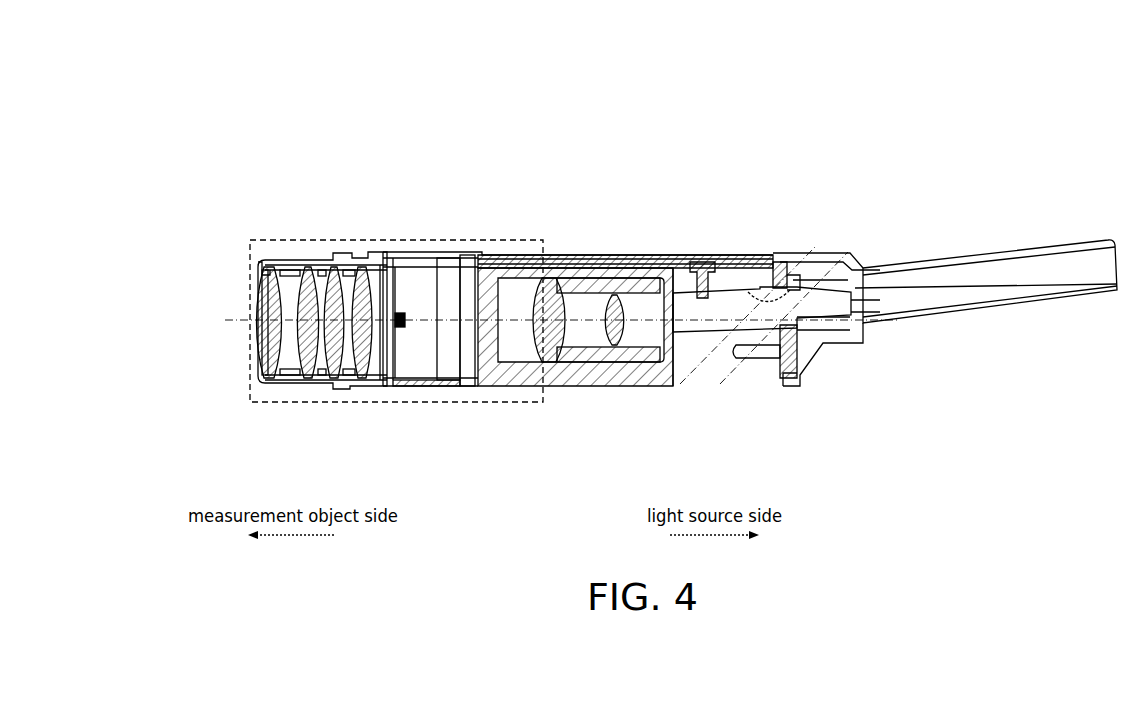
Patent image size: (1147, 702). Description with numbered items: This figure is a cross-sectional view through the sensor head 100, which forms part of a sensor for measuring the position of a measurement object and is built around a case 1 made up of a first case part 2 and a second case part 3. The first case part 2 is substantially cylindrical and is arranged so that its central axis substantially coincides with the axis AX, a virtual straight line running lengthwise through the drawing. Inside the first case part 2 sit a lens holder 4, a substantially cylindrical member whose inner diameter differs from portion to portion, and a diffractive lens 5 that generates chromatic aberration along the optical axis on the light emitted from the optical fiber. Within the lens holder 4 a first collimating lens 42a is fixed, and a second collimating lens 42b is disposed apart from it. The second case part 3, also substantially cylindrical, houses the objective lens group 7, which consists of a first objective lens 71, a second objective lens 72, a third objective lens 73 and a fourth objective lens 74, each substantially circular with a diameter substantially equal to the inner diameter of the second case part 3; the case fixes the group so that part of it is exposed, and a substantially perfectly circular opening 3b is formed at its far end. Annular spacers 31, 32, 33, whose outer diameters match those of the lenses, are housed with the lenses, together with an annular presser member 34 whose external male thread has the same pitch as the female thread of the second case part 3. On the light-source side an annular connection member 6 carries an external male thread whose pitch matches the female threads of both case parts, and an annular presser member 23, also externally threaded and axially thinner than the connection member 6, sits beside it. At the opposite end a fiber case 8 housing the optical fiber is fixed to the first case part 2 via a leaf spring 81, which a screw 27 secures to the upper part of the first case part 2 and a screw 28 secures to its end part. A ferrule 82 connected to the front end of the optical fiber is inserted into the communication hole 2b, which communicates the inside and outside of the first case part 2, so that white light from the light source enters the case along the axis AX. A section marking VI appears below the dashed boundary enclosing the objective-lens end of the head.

The sensor head 100 is at (668, 116).
The case 1 is at (467, 160).
The first case part 2 is at (476, 257).
The communication hole 2b is at (790, 264).
The second case part 3 is at (381, 254).
The opening 3b is at (258, 279).
The lens holder 4 is at (545, 388).
The diffractive lens 5 is at (466, 387).
The connection member 6 is at (410, 386).
The objective lens group 7 is at (377, 170).
The first objective lens 71 is at (262, 262).
The second objective lens 72 is at (310, 265).
The third objective lens 73 is at (331, 265).
The fourth objective lens 74 is at (358, 267).
The presser member 23 is at (445, 387).
The screw 27 is at (700, 262).
The screw 28 is at (800, 373).
The spacer 31 is at (285, 385).
The spacer 32 is at (320, 387).
The spacer 33 is at (345, 387).
The presser member 34 is at (385, 387).
The first collimating lens 42a is at (552, 270).
The second collimating lens 42b is at (611, 293).
The leaf spring 81 is at (762, 258).
The ferrule 82 is at (735, 262).
The fiber case 8 is at (985, 248).
The axis AX is at (243, 323).
The section VI is at (517, 402).